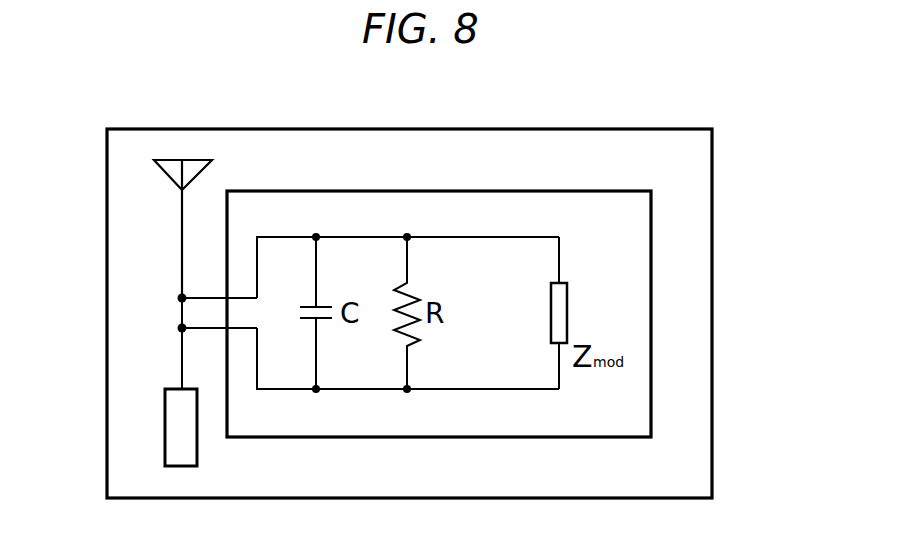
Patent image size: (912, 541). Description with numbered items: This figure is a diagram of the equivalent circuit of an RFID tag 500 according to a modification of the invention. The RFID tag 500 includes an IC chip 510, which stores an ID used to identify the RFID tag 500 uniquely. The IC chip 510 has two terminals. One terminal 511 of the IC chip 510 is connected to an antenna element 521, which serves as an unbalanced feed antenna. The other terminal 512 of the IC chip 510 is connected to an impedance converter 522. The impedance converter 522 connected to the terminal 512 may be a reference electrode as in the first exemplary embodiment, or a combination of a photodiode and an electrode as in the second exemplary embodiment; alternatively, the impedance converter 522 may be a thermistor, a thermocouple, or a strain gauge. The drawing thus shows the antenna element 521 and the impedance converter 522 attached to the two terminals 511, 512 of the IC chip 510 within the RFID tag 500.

The RFID tag 500 is at (750, 189).
The IC chip 510 is at (652, 310).
The terminal 511 is at (182, 298).
The terminal 512 is at (182, 328).
The antenna element 521 is at (156, 161).
The impedance converter 522 is at (182, 428).